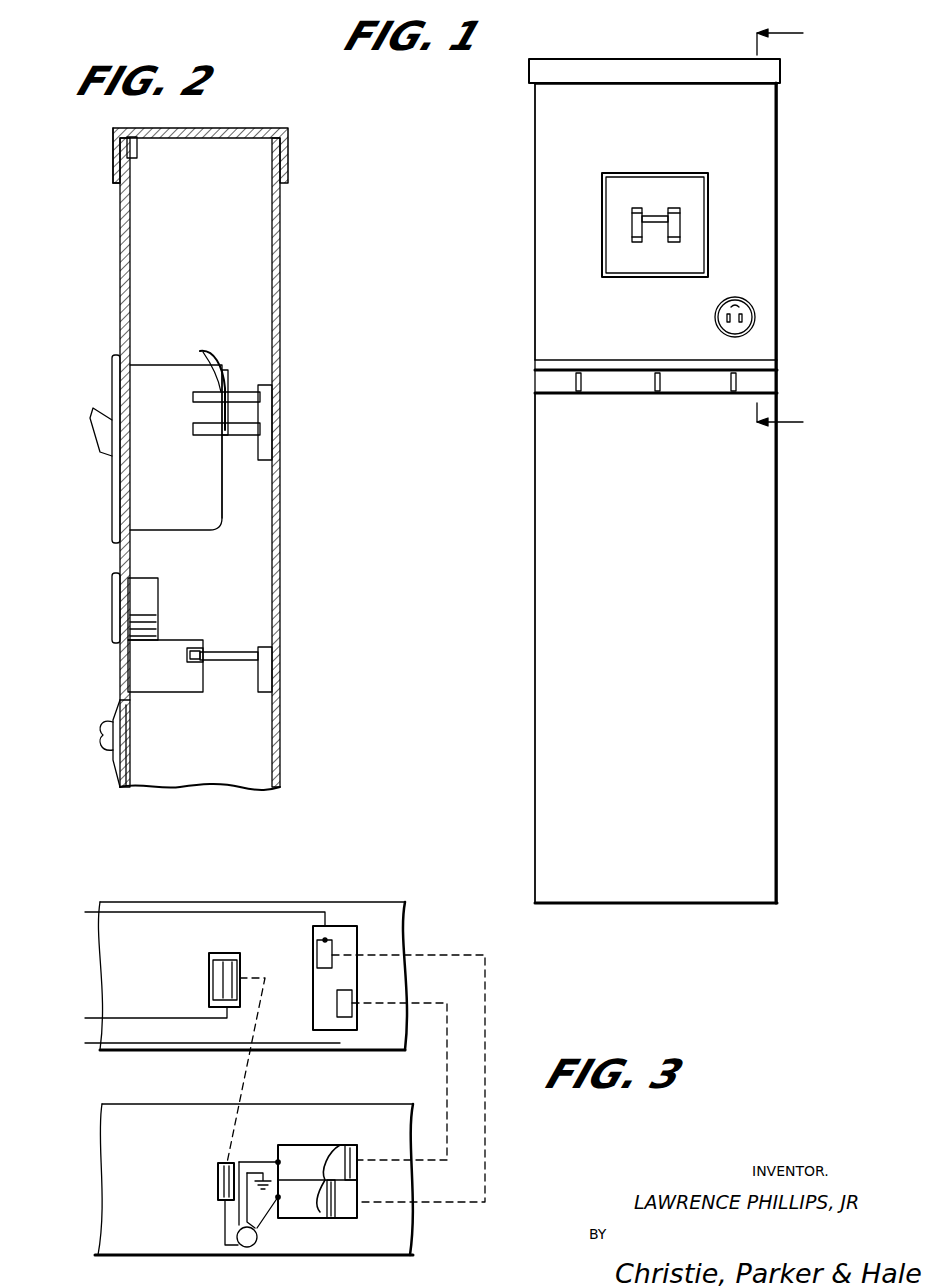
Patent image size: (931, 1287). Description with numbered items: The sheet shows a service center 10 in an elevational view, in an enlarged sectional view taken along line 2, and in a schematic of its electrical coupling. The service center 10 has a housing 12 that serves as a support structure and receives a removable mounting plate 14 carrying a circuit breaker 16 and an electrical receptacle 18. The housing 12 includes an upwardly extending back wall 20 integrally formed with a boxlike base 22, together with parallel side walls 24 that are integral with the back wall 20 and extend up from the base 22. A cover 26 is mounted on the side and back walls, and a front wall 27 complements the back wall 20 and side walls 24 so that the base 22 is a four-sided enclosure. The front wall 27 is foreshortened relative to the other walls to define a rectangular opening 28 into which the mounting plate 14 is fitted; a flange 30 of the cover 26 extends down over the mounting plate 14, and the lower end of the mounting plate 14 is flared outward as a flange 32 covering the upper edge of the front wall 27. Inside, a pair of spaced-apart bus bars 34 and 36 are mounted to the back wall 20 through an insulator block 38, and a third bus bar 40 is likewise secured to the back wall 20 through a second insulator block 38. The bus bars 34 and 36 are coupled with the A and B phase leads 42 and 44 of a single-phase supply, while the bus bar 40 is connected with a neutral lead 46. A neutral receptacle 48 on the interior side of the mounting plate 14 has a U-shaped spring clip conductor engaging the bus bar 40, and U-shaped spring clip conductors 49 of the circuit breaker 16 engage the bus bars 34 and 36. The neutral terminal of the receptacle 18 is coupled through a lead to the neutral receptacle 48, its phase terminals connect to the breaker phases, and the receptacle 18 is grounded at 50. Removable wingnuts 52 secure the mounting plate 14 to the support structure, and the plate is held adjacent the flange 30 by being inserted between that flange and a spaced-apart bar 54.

In FIG. 1, the section line 2 is at (788, 232).
In FIG. 1, the service center 10 is at (500, 635).
In FIG. 2, the service center 10 is at (300, 150).
In FIG. 1, the housing 12 is at (535, 505).
In FIG. 1, the mounting plate 14 is at (660, 133).
In FIG. 2, the mounting plate 14 is at (120, 260).
In FIG. 3, the mounting plate 14 is at (152, 1240).
In FIG. 1, the circuit breaker 16 is at (712, 200).
In FIG. 2, the circuit breaker 16 is at (112, 362).
In FIG. 3, the circuit breaker 16 is at (347, 1220).
In FIG. 1, the electrical receptacle 18 is at (757, 318).
In FIG. 2, the electrical receptacle 18 is at (115, 575).
In FIG. 3, the electrical receptacle 18 is at (262, 1245).
In FIG. 2, the back wall 20 is at (281, 495).
In FIG. 3, the back wall 20 is at (395, 902).
In FIG. 2, the base 22 is at (258, 790).
In FIG. 1, the side walls 24 is at (535, 170).
In FIG. 2, the side walls 24 is at (236, 565).
In FIG. 1, the cover 26 is at (654, 71).
In FIG. 2, the cover 26 is at (197, 130).
In FIG. 1, the front wall 27 is at (553, 793).
In FIG. 2, the front wall 27 is at (135, 790).
In FIG. 2, the rectangular opening 28 is at (117, 185).
In FIG. 2, the flange 30 is at (113, 143).
In FIG. 2, the flange 32 is at (110, 762).
In FIG. 2, the bus bar 34 is at (237, 395).
In FIG. 3, the bus bar 34 is at (325, 940).
In FIG. 2, the bus bar 36 is at (240, 435).
In FIG. 3, the bus bar 36 is at (350, 1020).
In FIG. 2, the insulator block 38 is at (270, 405).
In FIG. 3, the insulator block 38 is at (225, 953).
In FIG. 2, the third bus bar 40 is at (235, 652).
In FIG. 3, the third bus bar 40 is at (209, 975).
In FIG. 3, the lead 42 is at (133, 912).
In FIG. 3, the lead 44 is at (120, 1043).
In FIG. 3, the neutral lead 46 is at (140, 1018).
In FIG. 2, the neutral receptacle 48 is at (195, 648).
In FIG. 3, the neutral receptacle 48 is at (218, 1175).
In FIG. 2, the U-shaped spring clip conductors 49 is at (197, 383).
In FIG. 3, the U-shaped spring clip conductors 49 is at (320, 1180).
In FIG. 3, the ground 50 is at (250, 1173).
In FIG. 1, the wingnuts 52 is at (657, 372).
In FIG. 2, the wingnuts 52 is at (100, 732).
In FIG. 2, the bar 54 is at (143, 131).